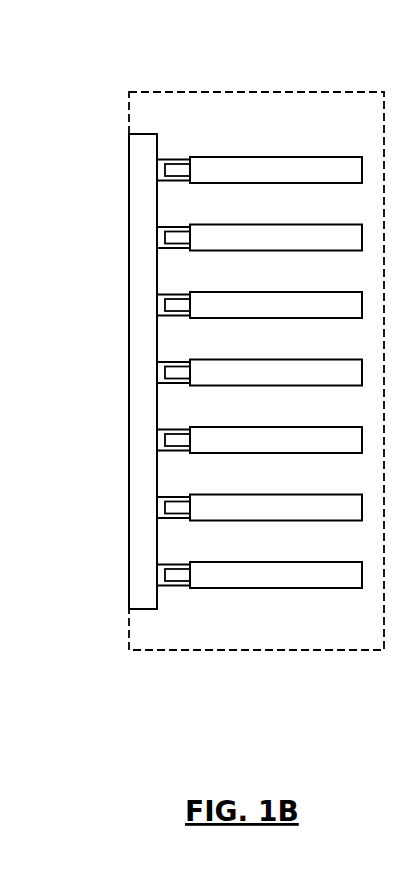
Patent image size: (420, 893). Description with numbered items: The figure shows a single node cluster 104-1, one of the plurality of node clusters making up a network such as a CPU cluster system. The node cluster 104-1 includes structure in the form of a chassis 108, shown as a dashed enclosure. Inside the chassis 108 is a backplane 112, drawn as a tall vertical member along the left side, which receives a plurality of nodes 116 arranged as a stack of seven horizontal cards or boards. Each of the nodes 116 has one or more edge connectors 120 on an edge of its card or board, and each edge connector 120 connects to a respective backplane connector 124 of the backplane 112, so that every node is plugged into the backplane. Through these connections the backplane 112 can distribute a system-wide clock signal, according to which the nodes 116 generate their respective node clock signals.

The node cluster 104-1 is at (107, 662).
The chassis 108 is at (257, 92).
The backplane 112 is at (129, 327).
The node 116 is at (278, 157).
The edge connector 120 is at (190, 562).
The backplane connector 124 is at (172, 586).